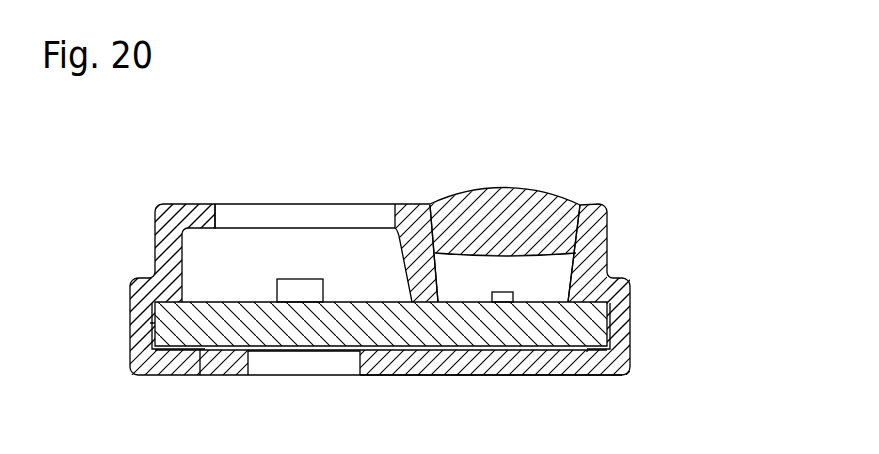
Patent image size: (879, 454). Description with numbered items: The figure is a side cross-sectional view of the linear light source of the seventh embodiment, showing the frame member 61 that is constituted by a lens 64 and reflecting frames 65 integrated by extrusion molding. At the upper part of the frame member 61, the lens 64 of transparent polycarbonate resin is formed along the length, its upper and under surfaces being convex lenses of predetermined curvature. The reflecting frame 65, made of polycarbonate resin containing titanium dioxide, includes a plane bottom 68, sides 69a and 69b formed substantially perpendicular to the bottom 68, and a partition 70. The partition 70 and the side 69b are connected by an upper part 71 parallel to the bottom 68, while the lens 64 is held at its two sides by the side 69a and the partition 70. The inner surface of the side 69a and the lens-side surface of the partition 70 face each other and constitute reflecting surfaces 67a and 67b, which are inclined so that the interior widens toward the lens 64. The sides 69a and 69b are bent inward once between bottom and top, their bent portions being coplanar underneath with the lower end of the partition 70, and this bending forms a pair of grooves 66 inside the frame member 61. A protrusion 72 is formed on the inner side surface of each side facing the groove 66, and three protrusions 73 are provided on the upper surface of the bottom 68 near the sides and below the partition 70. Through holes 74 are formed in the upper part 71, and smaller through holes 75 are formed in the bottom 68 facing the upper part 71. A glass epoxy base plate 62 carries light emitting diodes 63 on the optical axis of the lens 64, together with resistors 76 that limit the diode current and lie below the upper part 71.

The frame member 61 is at (590, 187).
The base plate 62 is at (515, 323).
The light emitting diode 63 is at (506, 296).
The lens 64 is at (472, 212).
The reflecting frame 65 is at (641, 381).
The groove 66 is at (152, 304).
The reflecting surface 67a is at (571, 270).
The reflecting surface 67b is at (443, 264).
The bottom 68 is at (452, 360).
The side 69a is at (593, 243).
The side 69b is at (165, 242).
The partition 70 is at (423, 250).
The upper part 71 is at (181, 211).
The protrusion 72 is at (152, 324).
The protrusion 73 is at (203, 364).
The through hole 74 is at (245, 212).
The through hole 75 is at (297, 363).
The resistor 76 is at (298, 290).